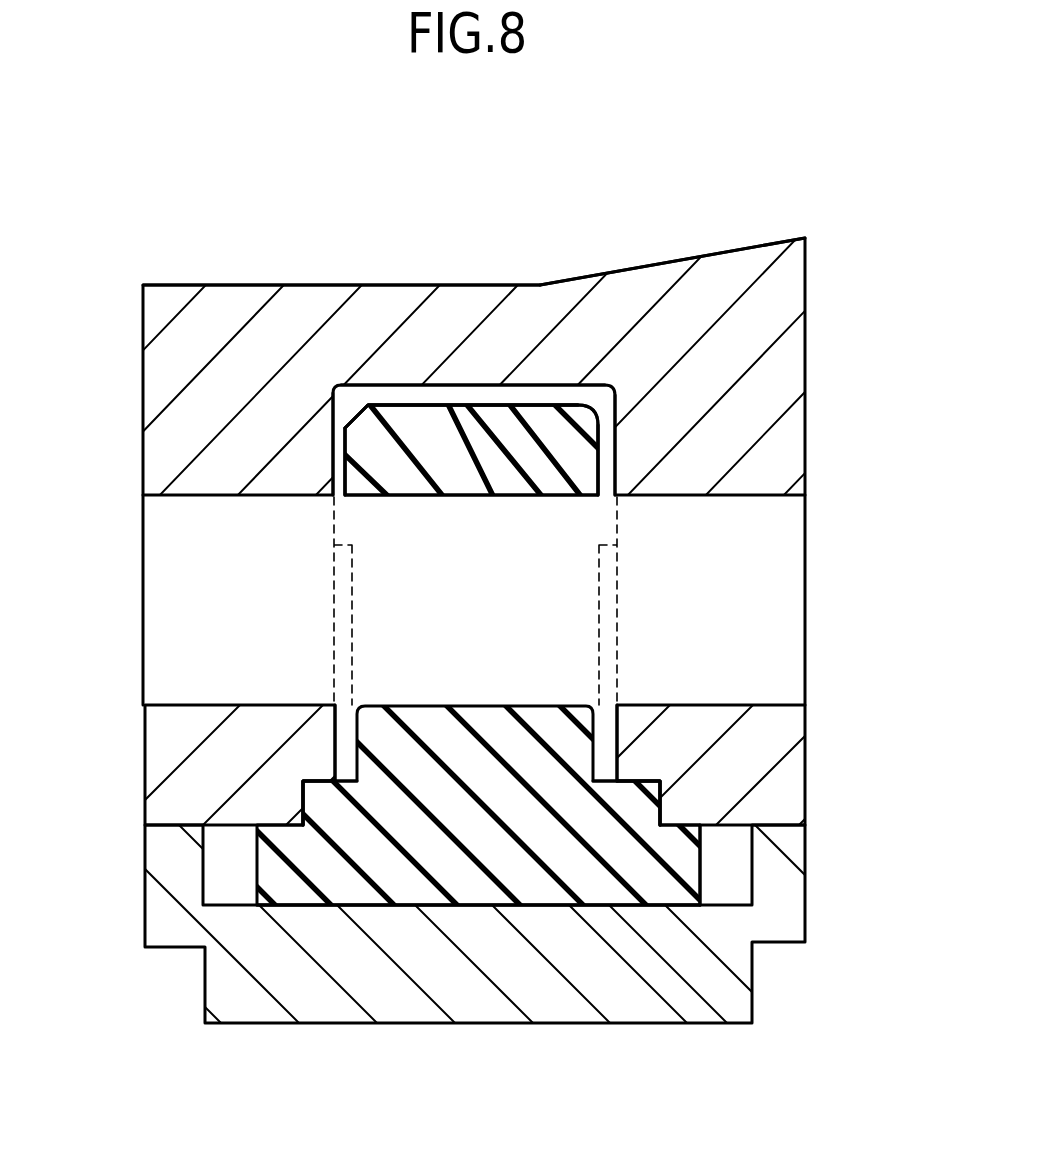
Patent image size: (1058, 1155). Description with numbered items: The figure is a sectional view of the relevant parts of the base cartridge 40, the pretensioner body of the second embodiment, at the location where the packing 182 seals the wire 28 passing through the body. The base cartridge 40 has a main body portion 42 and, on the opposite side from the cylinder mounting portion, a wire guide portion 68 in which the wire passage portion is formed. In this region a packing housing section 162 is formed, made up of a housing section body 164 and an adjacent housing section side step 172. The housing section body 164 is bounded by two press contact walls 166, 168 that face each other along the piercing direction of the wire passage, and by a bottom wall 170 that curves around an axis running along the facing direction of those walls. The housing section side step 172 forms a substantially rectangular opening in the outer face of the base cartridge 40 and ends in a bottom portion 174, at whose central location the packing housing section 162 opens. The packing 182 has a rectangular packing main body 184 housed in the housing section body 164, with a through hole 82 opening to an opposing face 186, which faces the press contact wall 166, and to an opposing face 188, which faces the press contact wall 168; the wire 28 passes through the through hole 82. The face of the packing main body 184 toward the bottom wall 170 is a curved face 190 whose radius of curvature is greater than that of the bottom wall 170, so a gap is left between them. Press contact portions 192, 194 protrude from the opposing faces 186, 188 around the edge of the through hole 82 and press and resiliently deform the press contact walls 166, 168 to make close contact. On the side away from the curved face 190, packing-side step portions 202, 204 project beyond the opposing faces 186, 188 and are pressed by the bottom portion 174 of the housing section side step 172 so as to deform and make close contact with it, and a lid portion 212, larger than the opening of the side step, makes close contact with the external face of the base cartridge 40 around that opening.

The base cartridge 40 is at (517, 330).
The wire guide portion 68 is at (340, 232).
The main body portion 42 is at (672, 210).
The packing housing section 162 is at (475, 551).
The housing section body 164 is at (461, 481).
The packing main body 184 is at (501, 349).
The curved face 190 is at (473, 304).
The bottom wall 170 is at (473, 317).
The press contact wall 168 is at (197, 416).
The opposing face 188 is at (202, 460).
The press contact wall 166 is at (763, 415).
The opposing face 186 is at (743, 457).
The wire 28 is at (523, 600).
The through hole 82 is at (489, 818).
The housing section side step 172 is at (419, 903).
The bottom portion 174 is at (448, 944).
The packing 182 is at (478, 1006).
The lid portion 212 is at (709, 966).
The press contact portion 194 is at (191, 743).
The press contact portion 192 is at (753, 741).
The packing-side step portion 204 is at (190, 805).
The packing-side step portion 202 is at (764, 805).